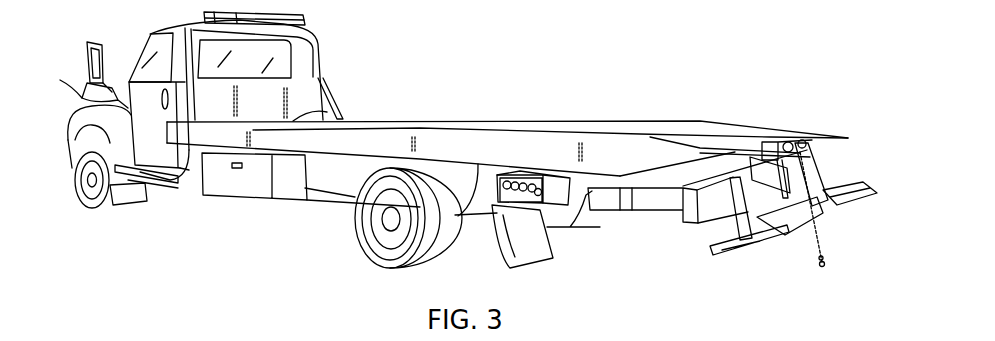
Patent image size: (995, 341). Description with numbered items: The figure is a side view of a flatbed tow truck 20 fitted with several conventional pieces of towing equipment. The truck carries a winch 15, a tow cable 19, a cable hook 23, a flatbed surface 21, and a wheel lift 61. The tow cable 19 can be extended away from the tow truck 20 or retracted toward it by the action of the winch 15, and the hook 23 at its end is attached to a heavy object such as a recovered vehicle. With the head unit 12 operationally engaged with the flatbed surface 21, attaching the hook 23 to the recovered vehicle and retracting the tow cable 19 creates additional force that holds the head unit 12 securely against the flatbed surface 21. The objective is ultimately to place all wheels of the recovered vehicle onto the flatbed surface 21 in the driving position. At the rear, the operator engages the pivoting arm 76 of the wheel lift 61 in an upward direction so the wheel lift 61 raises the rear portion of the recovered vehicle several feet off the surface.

The head unit 12 is at (780, 133).
The winch 15 is at (322, 111).
The tow cable 19 is at (488, 123).
The tow truck 20 is at (82, 100).
The flatbed surface 21 is at (480, 213).
The cable hook 23 is at (830, 253).
The wheel lift 61 is at (663, 218).
The pivoting arm 76 is at (602, 218).